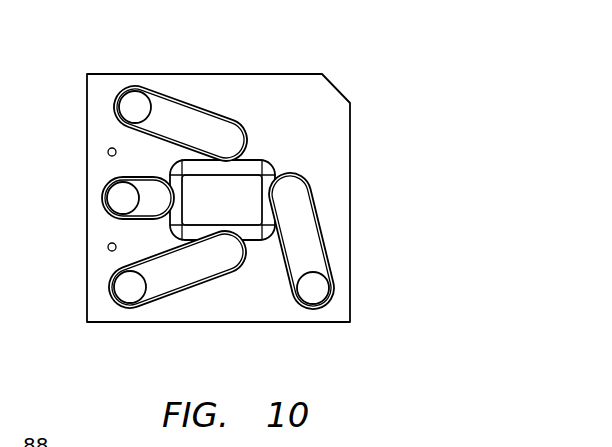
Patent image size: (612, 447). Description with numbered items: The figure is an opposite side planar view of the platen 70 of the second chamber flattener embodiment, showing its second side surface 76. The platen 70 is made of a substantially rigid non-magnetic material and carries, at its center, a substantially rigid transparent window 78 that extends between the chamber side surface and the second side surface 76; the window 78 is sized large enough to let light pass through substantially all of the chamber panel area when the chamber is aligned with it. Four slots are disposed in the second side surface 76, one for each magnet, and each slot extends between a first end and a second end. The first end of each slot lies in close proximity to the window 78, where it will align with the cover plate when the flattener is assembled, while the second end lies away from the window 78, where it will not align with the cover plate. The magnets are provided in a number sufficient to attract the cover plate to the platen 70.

The platen 70 is at (233, 200).
The second side surface 76 is at (305, 123).
The transparent window 78 is at (238, 210).